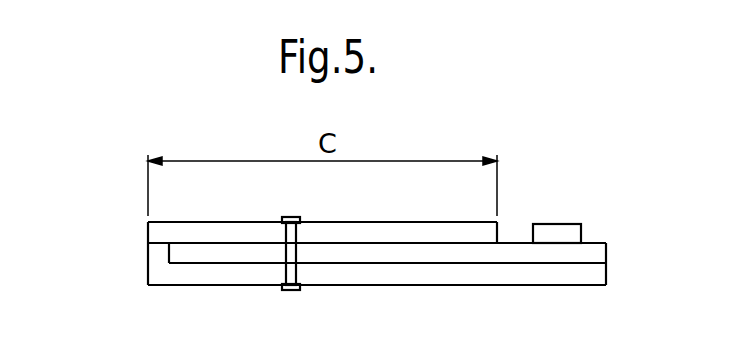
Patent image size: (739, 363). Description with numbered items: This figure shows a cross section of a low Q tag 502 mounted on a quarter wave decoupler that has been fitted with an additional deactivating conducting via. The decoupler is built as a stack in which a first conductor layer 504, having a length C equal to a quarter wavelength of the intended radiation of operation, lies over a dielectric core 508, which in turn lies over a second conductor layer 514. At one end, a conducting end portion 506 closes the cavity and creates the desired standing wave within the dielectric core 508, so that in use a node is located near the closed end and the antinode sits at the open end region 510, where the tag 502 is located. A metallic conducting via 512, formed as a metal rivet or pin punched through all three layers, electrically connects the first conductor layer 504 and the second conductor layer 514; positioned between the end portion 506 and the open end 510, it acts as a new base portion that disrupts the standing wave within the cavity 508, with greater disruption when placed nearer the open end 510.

The low Q tag 502 is at (552, 233).
The first conductor layer 504 is at (220, 235).
The conducting end portion 506 is at (160, 252).
The dielectric core 508 is at (180, 249).
The open end region 510 is at (516, 222).
The conducting via 512 is at (292, 290).
The second conductor layer 514 is at (226, 270).